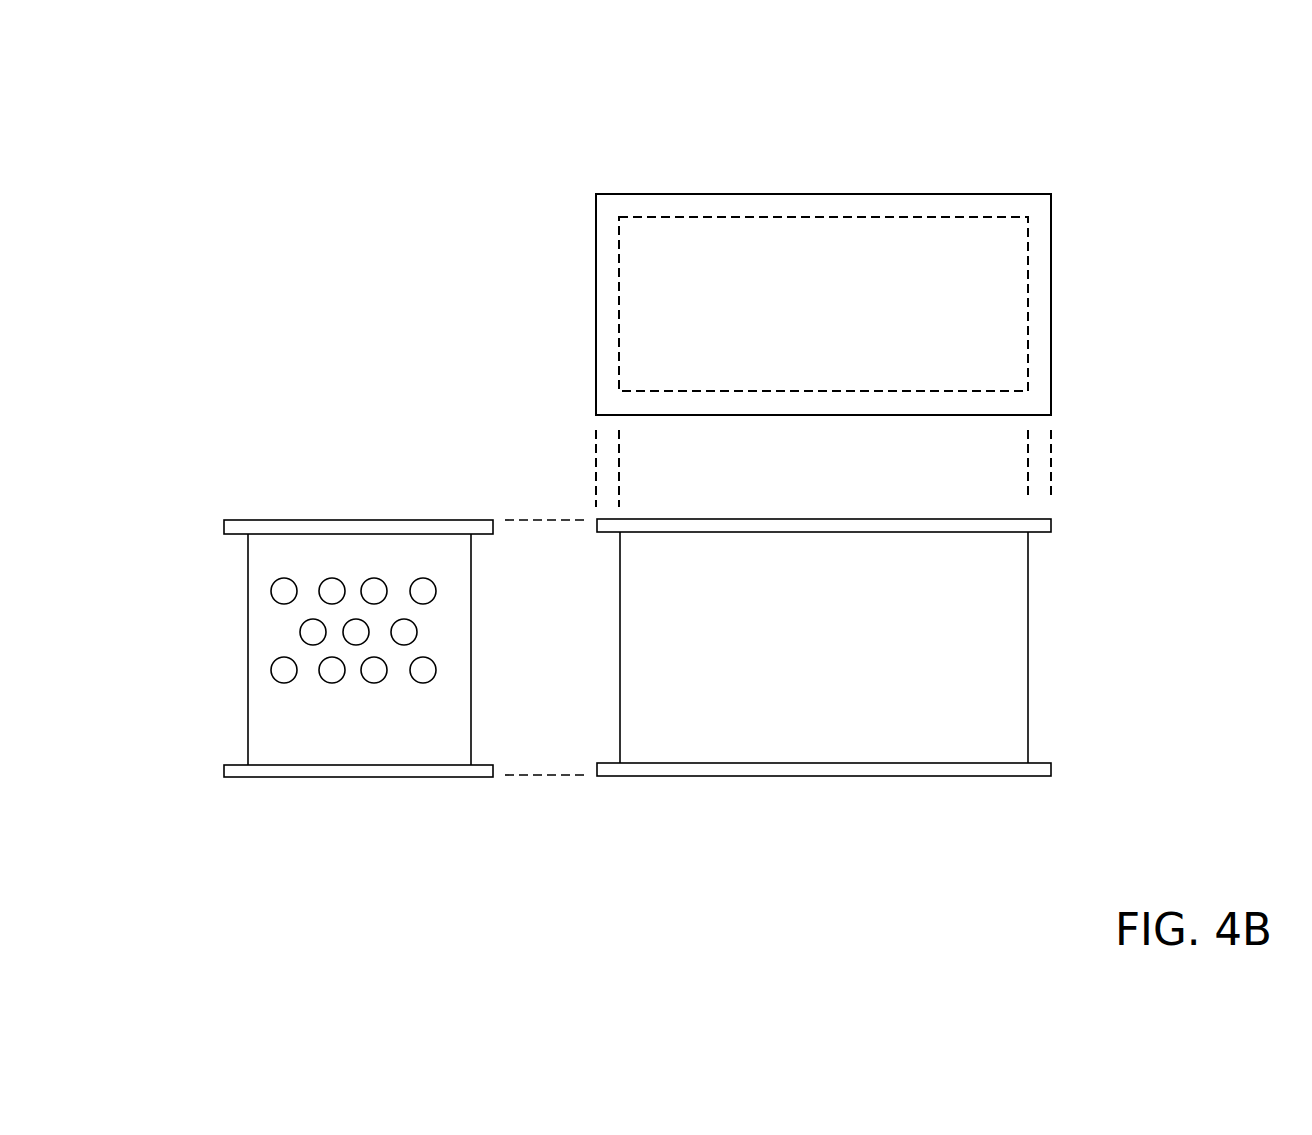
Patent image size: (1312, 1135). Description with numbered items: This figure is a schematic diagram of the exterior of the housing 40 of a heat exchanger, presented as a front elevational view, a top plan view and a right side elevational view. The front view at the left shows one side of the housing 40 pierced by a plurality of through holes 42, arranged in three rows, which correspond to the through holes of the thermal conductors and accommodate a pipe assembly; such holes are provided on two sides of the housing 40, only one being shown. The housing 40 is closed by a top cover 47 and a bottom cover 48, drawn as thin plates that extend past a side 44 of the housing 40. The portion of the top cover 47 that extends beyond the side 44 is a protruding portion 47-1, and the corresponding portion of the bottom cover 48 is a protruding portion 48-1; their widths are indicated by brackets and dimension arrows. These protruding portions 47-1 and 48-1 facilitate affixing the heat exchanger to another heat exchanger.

The housing 40 is at (1136, 142).
The through holes 42 is at (272, 670).
The side 44 is at (619, 681).
The top cover 47 is at (364, 520).
The protruding portion 47-1 is at (238, 490).
The bottom cover 48 is at (402, 777).
The protruding portion 48-1 is at (238, 805).